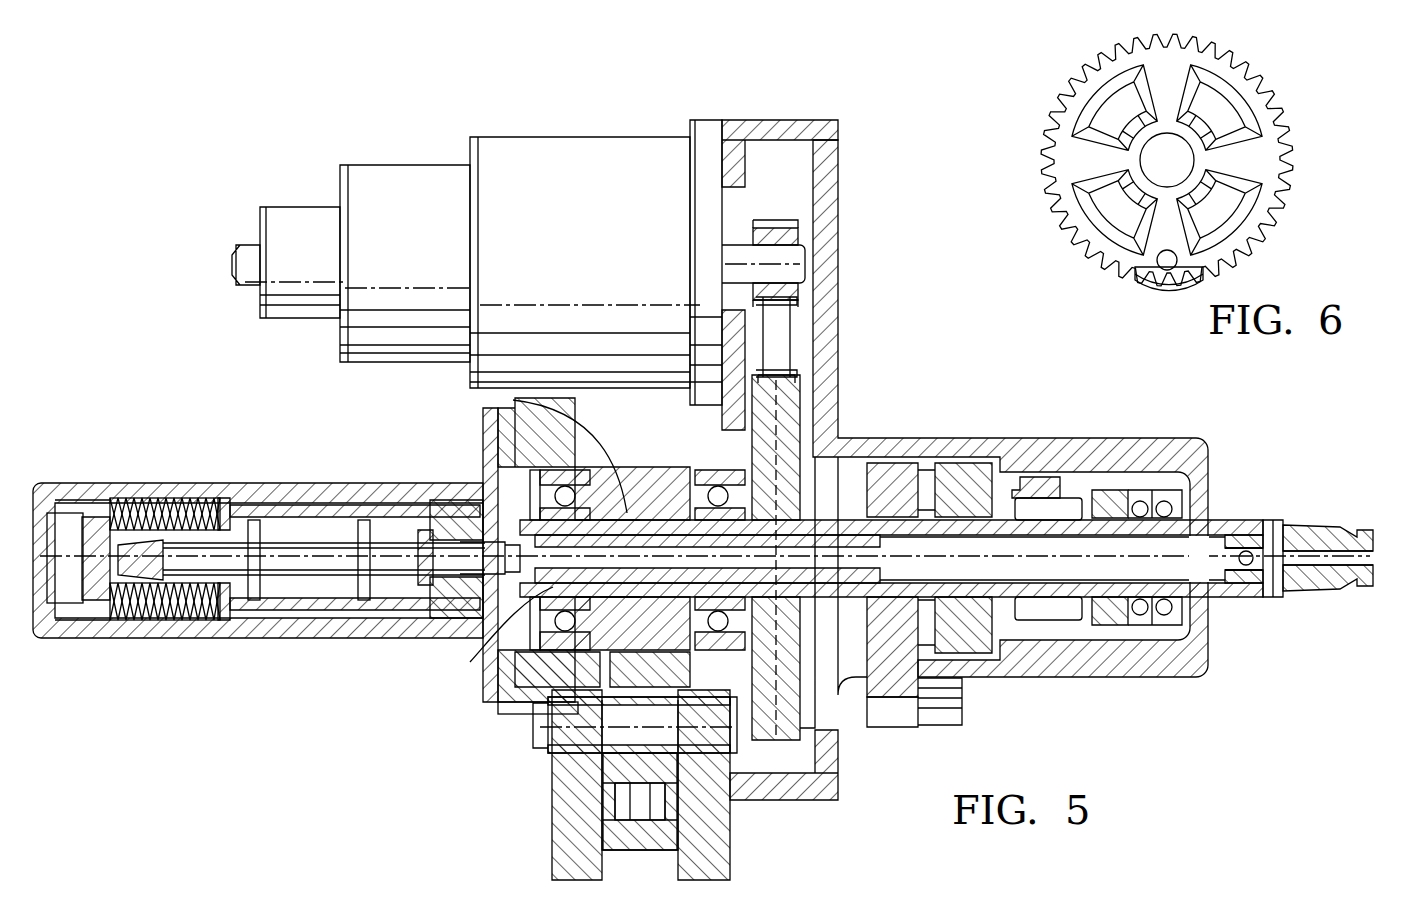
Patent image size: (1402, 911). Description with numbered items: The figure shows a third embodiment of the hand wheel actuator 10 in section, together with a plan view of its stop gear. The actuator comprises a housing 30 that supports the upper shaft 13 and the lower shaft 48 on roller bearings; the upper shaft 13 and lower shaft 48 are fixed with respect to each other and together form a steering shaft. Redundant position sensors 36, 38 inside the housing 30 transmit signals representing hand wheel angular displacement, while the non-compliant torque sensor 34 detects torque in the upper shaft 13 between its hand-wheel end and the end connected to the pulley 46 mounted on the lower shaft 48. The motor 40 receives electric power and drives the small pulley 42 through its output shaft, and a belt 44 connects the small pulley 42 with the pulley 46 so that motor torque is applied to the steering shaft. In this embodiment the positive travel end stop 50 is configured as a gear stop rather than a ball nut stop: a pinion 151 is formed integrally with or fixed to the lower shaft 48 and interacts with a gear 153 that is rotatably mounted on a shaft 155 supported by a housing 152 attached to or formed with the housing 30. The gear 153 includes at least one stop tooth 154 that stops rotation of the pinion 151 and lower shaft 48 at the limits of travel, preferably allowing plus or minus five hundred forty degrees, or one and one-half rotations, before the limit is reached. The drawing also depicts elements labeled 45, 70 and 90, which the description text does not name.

In FIG. 5, the hand wheel actuator 10 is at (960, 374).
In FIG. 5, the upper shaft 13 is at (1245, 518).
In FIG. 5, the housing 30 is at (1085, 677).
In FIG. 5, the non-compliant torque sensor 34 is at (1060, 510).
In FIG. 5, the position sensor 36 is at (980, 470).
In FIG. 5, the position sensor 38 is at (900, 470).
In FIG. 5, the motor 40 is at (655, 170).
In FIG. 5, the small pulley 42 is at (797, 240).
In FIG. 5, the belt 44 is at (778, 330).
In FIG. 5, the motor housing 45 is at (845, 340).
In FIG. 5, the pulley 46 is at (790, 422).
In FIG. 5, the lower shaft 48 is at (553, 587).
In FIG. 5, the positive travel end stop 50 is at (520, 740).
In FIG. 5, the auxiliary motor 70 is at (293, 218).
In FIG. 5, the pressure cylinder 90 is at (181, 458).
In FIG. 5, the pinion 151 is at (513, 400).
In FIG. 5, the housing 152 is at (568, 838).
In FIG. 5, the gear 153 is at (646, 678).
In FIG. 6, the gear 153 is at (1248, 68).
In FIG. 6, the stop tooth 154 is at (1152, 284).
In FIG. 5, the shaft 155 is at (570, 728).